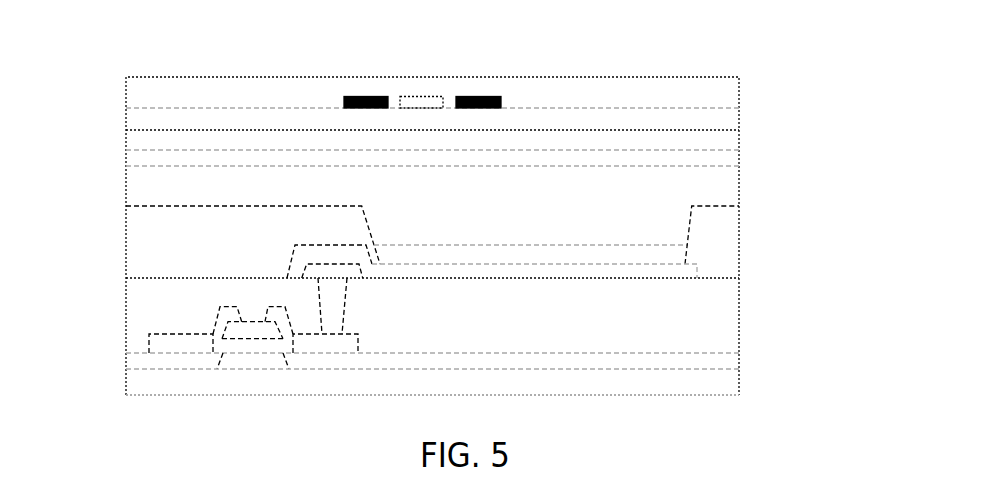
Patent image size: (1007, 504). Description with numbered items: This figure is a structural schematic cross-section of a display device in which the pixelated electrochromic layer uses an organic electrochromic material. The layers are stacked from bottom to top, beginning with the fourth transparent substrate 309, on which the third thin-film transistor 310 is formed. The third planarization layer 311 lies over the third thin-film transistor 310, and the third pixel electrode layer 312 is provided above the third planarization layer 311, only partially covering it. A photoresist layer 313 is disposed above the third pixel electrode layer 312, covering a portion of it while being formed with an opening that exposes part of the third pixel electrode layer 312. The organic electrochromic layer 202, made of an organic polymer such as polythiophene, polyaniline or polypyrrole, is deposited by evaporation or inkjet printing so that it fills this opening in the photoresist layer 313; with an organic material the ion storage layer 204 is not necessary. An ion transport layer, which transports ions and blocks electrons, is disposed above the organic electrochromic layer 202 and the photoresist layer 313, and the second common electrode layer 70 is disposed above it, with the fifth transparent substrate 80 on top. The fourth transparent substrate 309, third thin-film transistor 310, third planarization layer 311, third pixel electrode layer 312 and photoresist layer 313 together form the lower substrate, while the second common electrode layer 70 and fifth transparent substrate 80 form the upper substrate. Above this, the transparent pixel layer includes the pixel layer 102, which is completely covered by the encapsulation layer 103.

The pixel layer 102 is at (368, 95).
The encapsulation layer 103 is at (126, 98).
The fifth transparent substrate 80 is at (739, 138).
The second common electrode layer 70 is at (126, 161).
The ion storage layer 204 is at (718, 190).
The photoresist layer 313 is at (739, 223).
The organic electrochromic layer 202 is at (687, 251).
The third pixel electrode layer 312 is at (292, 260).
The third planarization layer 311 is at (735, 290).
The third thin-film transistor 310 is at (230, 339).
The fourth transparent substrate 309 is at (740, 379).